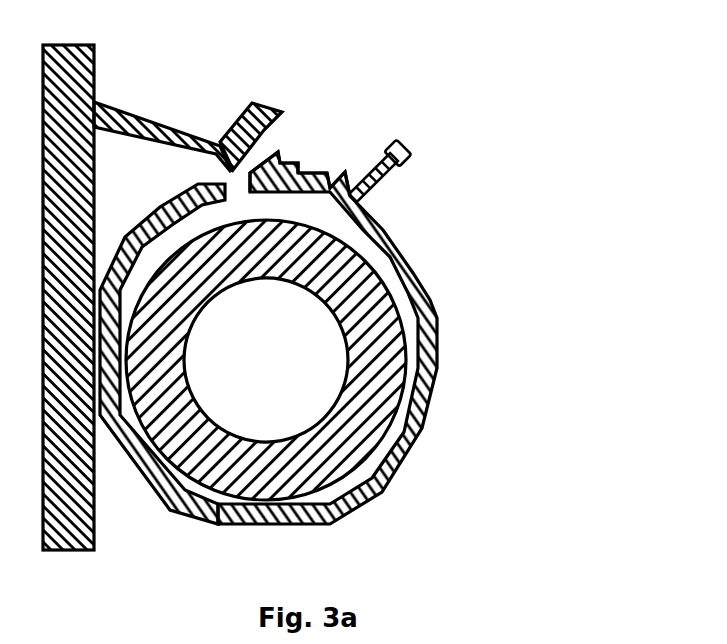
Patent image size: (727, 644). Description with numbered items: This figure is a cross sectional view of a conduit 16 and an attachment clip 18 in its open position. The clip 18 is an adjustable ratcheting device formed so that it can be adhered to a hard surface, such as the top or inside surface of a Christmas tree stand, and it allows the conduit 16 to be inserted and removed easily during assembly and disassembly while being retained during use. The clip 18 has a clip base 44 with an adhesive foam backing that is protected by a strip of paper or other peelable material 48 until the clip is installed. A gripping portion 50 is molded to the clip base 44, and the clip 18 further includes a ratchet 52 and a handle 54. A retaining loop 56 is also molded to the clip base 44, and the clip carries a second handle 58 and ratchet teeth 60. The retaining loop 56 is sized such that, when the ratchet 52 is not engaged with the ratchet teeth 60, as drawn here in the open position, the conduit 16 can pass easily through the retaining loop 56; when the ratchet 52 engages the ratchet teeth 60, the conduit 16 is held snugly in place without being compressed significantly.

The conduit 16 is at (390, 447).
The clip 18 is at (533, 347).
The clip base 44 is at (95, 72).
The peelable material 48 is at (258, 112).
The gripping portion 50 is at (153, 121).
The ratchet 52 is at (247, 150).
The handle 54 is at (271, 104).
The retaining loop 56 is at (344, 301).
The handle 58 is at (412, 162).
The ratchet teeth 60 is at (310, 168).